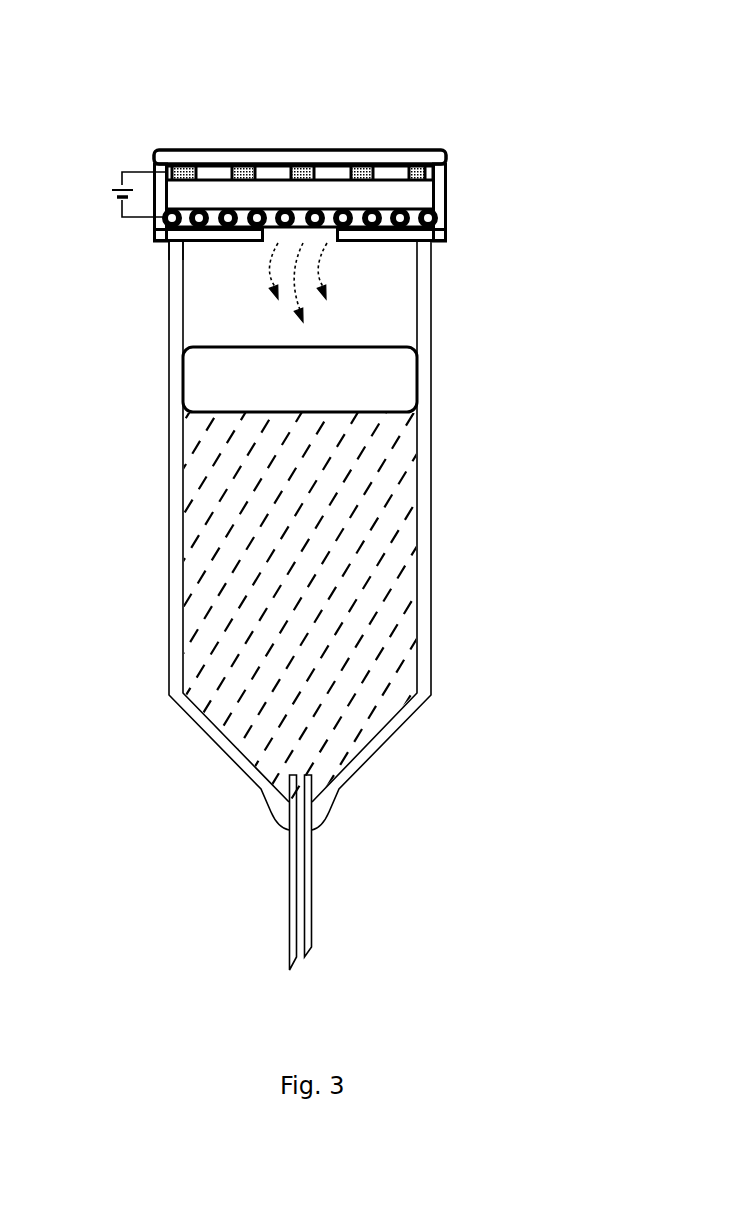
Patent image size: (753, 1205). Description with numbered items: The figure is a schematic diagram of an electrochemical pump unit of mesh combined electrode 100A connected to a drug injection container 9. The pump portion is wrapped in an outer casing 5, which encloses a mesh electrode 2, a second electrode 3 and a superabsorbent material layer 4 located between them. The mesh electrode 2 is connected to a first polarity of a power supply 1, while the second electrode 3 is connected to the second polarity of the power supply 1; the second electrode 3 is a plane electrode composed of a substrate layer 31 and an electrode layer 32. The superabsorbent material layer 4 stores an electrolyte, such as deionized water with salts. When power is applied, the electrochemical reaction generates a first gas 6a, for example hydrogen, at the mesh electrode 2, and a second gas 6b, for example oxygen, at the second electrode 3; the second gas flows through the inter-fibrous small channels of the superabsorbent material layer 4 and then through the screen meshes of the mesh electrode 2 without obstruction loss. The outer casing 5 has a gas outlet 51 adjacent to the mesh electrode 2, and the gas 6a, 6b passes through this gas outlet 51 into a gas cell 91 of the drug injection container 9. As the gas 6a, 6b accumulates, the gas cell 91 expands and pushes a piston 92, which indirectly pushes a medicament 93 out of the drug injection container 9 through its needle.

The electrochemical pump unit of mesh combined electrode 100A is at (389, 47).
The power supply 1 is at (112, 197).
The mesh electrode 2 is at (433, 220).
The second electrode 3 is at (530, 108).
The substrate layer 31 is at (437, 149).
The electrode layer 32 is at (444, 166).
The superabsorbent material layer 4 is at (415, 197).
The outer casing 5 is at (152, 228).
The gas outlet 51 is at (168, 250).
The gas 6a is at (335, 265).
The gas 6b is at (440, 306).
The drug injection container 9 is at (168, 418).
The gas cell 91 is at (197, 317).
The piston 92 is at (385, 393).
The medicament 93 is at (397, 587).